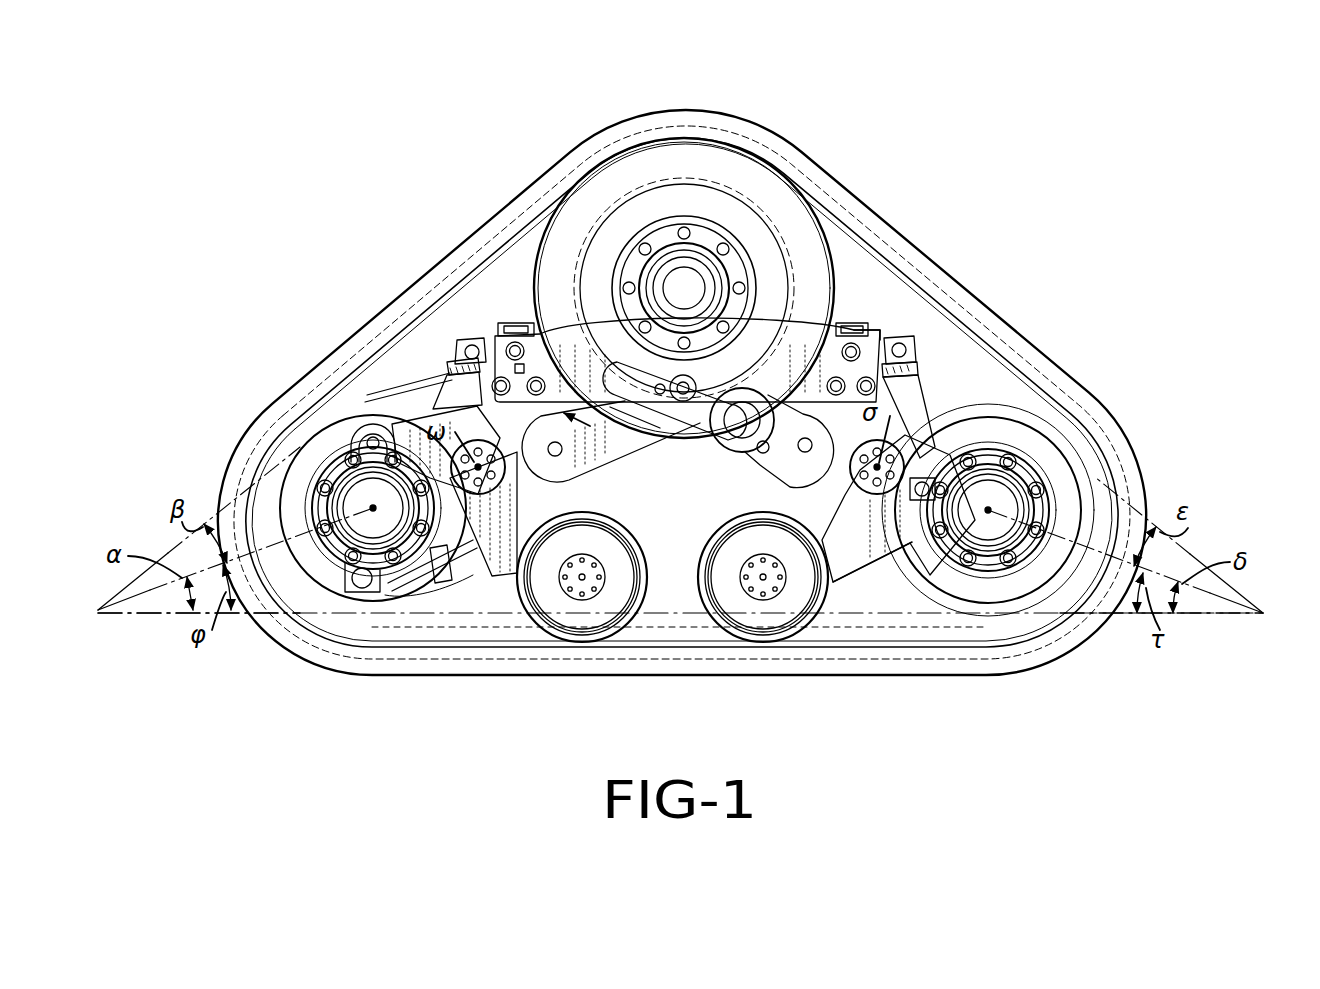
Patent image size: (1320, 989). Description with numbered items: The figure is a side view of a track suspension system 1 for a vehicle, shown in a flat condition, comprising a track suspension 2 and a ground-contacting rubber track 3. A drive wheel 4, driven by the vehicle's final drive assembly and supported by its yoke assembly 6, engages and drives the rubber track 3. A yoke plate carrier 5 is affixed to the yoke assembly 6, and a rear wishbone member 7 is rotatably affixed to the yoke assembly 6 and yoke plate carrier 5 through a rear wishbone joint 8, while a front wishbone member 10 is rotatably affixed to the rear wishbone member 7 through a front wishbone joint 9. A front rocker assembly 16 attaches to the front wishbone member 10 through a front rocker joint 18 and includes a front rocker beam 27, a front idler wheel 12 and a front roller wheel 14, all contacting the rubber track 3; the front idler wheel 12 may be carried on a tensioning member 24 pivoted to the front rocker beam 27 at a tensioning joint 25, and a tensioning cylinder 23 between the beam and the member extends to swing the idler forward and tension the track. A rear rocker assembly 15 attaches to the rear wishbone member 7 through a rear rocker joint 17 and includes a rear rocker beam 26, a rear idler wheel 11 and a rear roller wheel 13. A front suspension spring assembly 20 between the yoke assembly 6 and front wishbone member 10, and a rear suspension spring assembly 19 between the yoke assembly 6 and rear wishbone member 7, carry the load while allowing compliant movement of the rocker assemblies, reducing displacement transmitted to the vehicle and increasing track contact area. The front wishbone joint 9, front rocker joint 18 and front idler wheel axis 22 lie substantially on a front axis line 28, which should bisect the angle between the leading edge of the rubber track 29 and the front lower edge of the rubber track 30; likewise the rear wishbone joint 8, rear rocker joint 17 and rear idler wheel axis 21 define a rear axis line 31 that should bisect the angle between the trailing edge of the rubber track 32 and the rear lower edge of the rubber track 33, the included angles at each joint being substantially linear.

The track suspension system 1 is at (344, 160).
The track suspension 2 is at (678, 565).
The rubber track 3 is at (755, 132).
The drive wheel 4 is at (772, 193).
The yoke plate carrier 5 is at (793, 350).
The yoke assembly 6 is at (852, 322).
The rear wishbone member 7 is at (800, 456).
The rear wishbone joint 8 is at (742, 420).
The front wishbone joint 9 is at (665, 378).
The front wishbone member 10 is at (650, 432).
The rear idler wheel 11 is at (1068, 495).
The front idler wheel 12 is at (305, 478).
The rear roller wheel 13 is at (766, 605).
The front roller wheel 14 is at (584, 605).
The rear rocker assembly 15 is at (852, 590).
The front rocker assembly 16 is at (505, 550).
The rear rocker joint 17 is at (870, 474).
The front rocker joint 18 is at (468, 340).
The rear suspension spring assembly 19 is at (910, 385).
The front suspension spring assembly 20 is at (455, 385).
The rear idler wheel axis 21 is at (1070, 468).
The front idler wheel axis 22 is at (372, 512).
The tensioning cylinder 23 is at (455, 572).
The tensioning member 24 is at (342, 420).
The tensioning joint 25 is at (373, 425).
The rear rocker beam 26 is at (897, 535).
The front rocker beam 27 is at (548, 504).
The front axis line 28 is at (162, 590).
The leading edge of the rubber track 29 is at (165, 556).
The front lower edge of the rubber track 30 is at (178, 615).
The rear axis line 31 is at (1062, 536).
The trailing edge of the rubber track 32 is at (1190, 556).
The rear lower edge of the rubber track 33 is at (1192, 615).